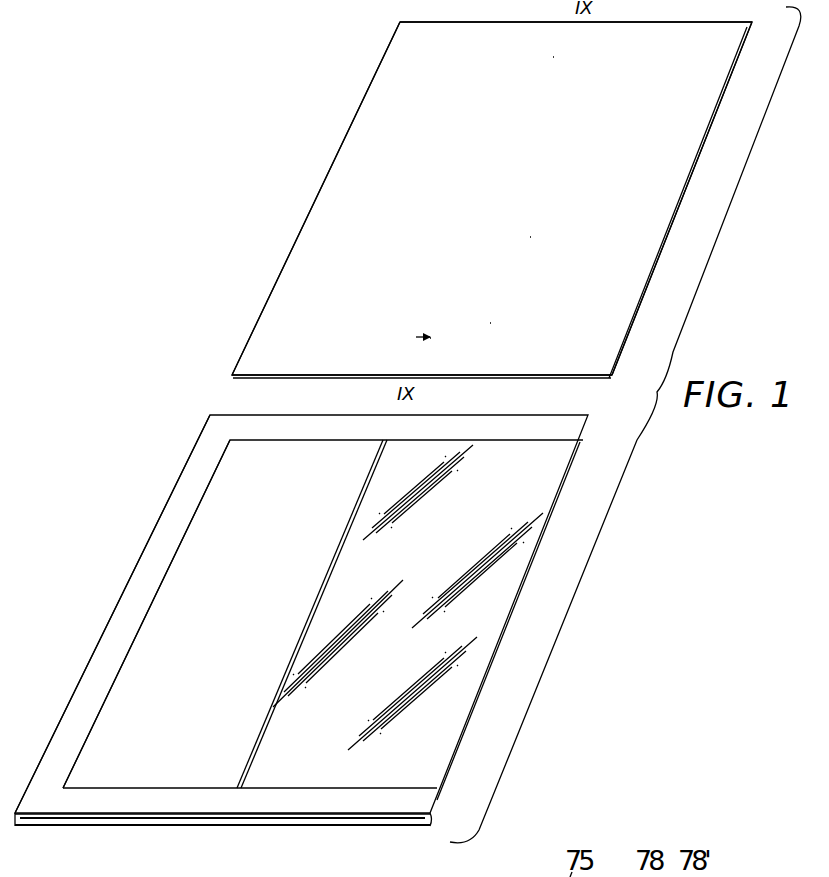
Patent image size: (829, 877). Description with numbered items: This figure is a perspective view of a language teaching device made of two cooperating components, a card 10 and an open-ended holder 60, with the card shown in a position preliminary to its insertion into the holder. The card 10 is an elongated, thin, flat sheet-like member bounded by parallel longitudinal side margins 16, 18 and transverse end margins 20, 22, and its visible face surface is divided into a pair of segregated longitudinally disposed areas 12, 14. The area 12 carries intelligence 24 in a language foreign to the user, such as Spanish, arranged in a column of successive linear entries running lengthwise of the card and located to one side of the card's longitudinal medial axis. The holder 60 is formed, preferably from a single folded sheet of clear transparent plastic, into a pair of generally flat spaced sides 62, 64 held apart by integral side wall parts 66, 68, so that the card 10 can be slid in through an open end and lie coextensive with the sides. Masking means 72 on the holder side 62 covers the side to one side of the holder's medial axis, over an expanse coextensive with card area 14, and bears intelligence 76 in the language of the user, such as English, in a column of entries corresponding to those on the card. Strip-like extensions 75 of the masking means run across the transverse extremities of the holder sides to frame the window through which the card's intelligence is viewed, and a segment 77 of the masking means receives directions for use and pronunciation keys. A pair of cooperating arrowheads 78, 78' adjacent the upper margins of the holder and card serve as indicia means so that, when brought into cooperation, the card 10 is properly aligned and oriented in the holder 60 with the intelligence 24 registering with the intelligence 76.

The card 10 is at (288, 192).
The longitudinally disposed area 12 is at (621, 134).
The longitudinally disposed area 14 is at (463, 106).
The longitudinal side margin 16 is at (285, 268).
The longitudinal side margin 18 is at (701, 153).
The transverse end margin 20 is at (404, 21).
The transverse end margin 22 is at (579, 379).
The intelligence 24 is at (530, 237).
The holder 60 is at (132, 545).
The side 62 is at (171, 817).
The side 64 is at (244, 826).
The side wall part 66 is at (17, 820).
The side wall part 68 is at (430, 818).
The masking means 72 is at (289, 533).
The strip-like extension 75 is at (480, 420).
The intelligence 76 is at (240, 465).
The segment of masking means 77 is at (122, 616).
The arrowhead 78 is at (312, 583).
The arrowhead 78' is at (479, 216).